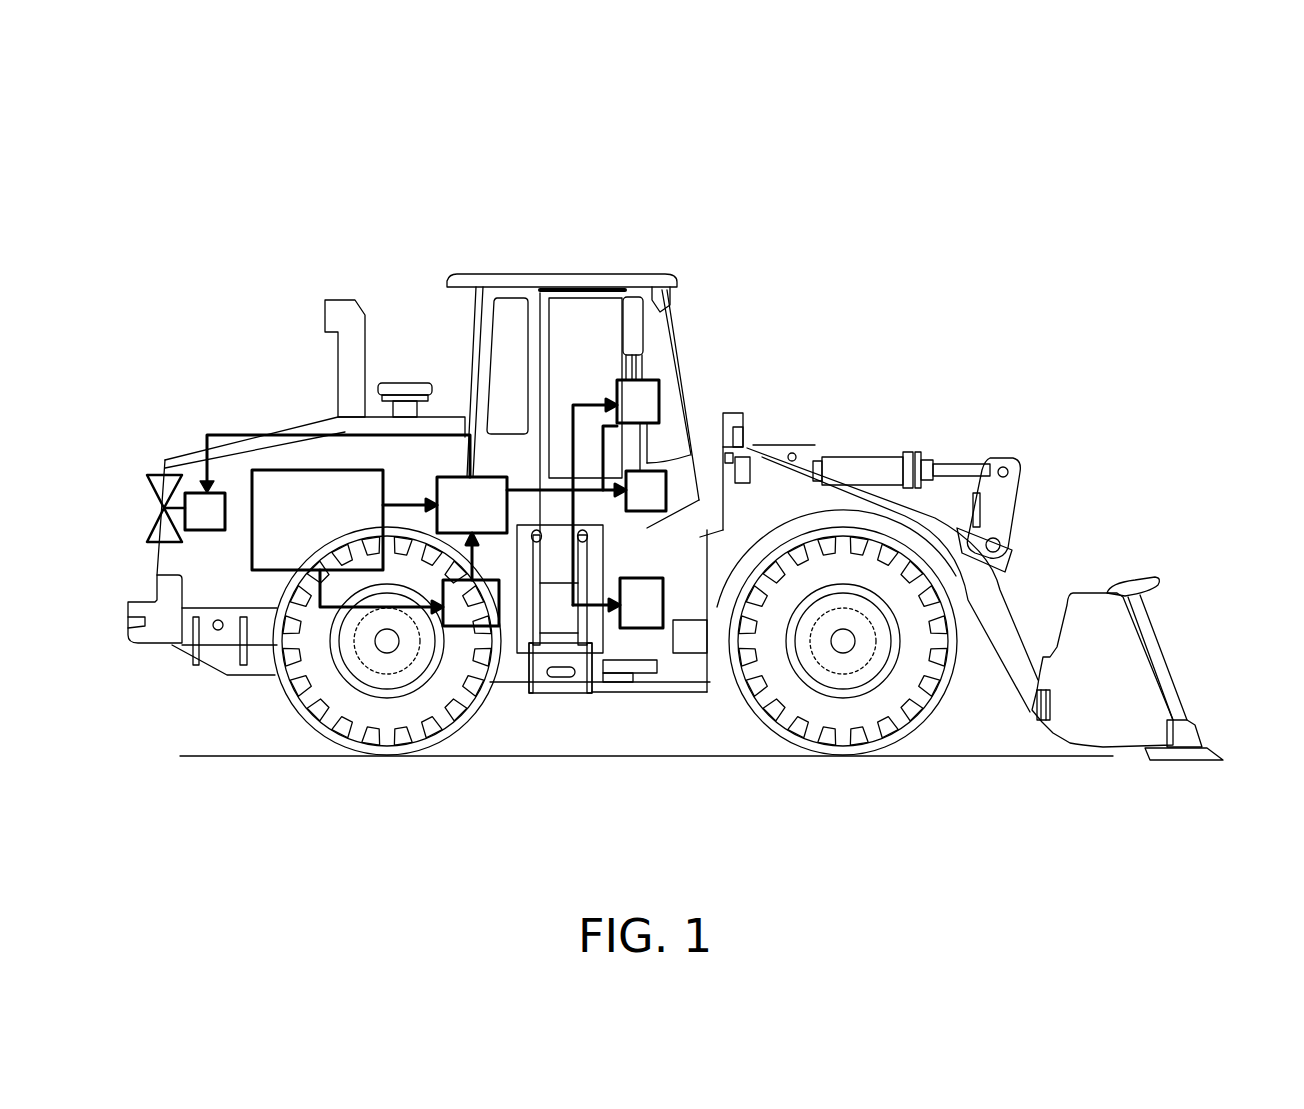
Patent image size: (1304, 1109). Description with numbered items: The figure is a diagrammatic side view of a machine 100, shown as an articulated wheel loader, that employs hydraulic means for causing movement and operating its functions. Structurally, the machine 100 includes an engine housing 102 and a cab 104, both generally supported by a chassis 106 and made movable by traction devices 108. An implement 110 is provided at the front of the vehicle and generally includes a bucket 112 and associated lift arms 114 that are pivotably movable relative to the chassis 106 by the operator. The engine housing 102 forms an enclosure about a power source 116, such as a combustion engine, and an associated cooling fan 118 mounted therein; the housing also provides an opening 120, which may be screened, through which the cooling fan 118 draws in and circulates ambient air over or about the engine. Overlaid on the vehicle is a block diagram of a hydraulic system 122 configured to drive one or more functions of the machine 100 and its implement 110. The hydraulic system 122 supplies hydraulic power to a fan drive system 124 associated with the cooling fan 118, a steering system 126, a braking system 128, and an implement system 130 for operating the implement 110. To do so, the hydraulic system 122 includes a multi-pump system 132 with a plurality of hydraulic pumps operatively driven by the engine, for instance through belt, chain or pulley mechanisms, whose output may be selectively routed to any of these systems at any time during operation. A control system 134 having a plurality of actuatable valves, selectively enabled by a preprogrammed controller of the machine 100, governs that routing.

The machine 100 is at (985, 243).
The engine housing 102 is at (330, 418).
The cab 104 is at (604, 280).
The chassis 106 is at (545, 690).
The traction devices 108 is at (308, 703).
The implement 110 is at (995, 508).
The bucket 112 is at (1152, 678).
The lift arms 114 is at (993, 618).
The power source 116 is at (347, 541).
The cooling fan 118 is at (152, 510).
The opening 120 is at (152, 545).
The hydraulic system 122 is at (196, 409).
The fan drive system 124 is at (205, 510).
The steering system 126 is at (647, 396).
The braking system 128 is at (653, 487).
The implement system 130 is at (645, 617).
The multi-pump system 132 is at (472, 505).
The control system 134 is at (471, 579).